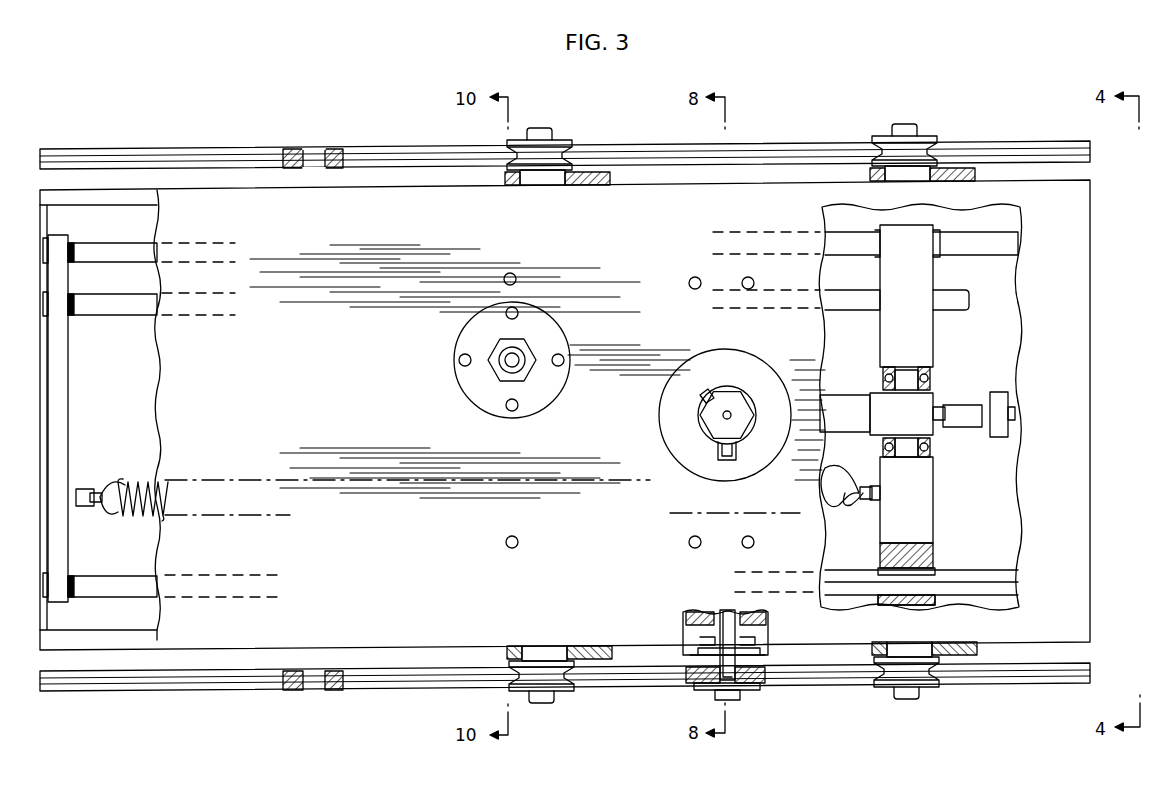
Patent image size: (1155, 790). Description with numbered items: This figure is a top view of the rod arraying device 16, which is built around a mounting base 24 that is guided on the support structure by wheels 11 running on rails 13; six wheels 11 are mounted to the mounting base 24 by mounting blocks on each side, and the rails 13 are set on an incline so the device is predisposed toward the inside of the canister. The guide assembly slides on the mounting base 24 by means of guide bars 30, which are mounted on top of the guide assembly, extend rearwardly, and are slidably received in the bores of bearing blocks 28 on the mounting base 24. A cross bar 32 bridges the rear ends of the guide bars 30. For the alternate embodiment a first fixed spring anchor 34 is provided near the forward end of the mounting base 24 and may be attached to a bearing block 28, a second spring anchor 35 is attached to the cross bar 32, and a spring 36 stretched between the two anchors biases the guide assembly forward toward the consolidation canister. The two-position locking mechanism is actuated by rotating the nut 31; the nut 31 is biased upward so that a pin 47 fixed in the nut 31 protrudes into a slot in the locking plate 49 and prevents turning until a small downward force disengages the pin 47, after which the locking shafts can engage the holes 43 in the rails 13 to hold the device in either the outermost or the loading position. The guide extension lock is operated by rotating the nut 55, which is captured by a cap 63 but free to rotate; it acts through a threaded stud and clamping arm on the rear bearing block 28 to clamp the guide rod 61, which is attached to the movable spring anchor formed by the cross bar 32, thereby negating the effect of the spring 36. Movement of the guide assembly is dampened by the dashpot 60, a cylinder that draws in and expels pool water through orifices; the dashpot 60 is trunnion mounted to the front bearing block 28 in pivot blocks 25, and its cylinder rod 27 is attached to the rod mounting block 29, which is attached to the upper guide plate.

The wheels 11 is at (942, 688).
The rails 13 is at (135, 152).
The rod arraying device 16 is at (1100, 229).
The mounting base 24 is at (1068, 502).
The pivot blocks 25 is at (932, 378).
The cylinder rod 27 is at (940, 405).
The bearing blocks 28 is at (940, 488).
The rod mounting block 29 is at (1000, 398).
The guide bars 30 is at (137, 258).
The nut 31 is at (730, 410).
The cross bar 32 is at (70, 400).
The first fixed spring anchor 34 is at (868, 500).
The second spring anchor 35 is at (88, 486).
The spring 36 is at (140, 488).
The holes 43 is at (750, 682).
The pin 47 is at (715, 450).
The locking plate 49 is at (776, 458).
The nut 55 is at (530, 350).
The dashpot 60 is at (836, 400).
The guide rod 61 is at (108, 308).
The cap 63 is at (470, 380).